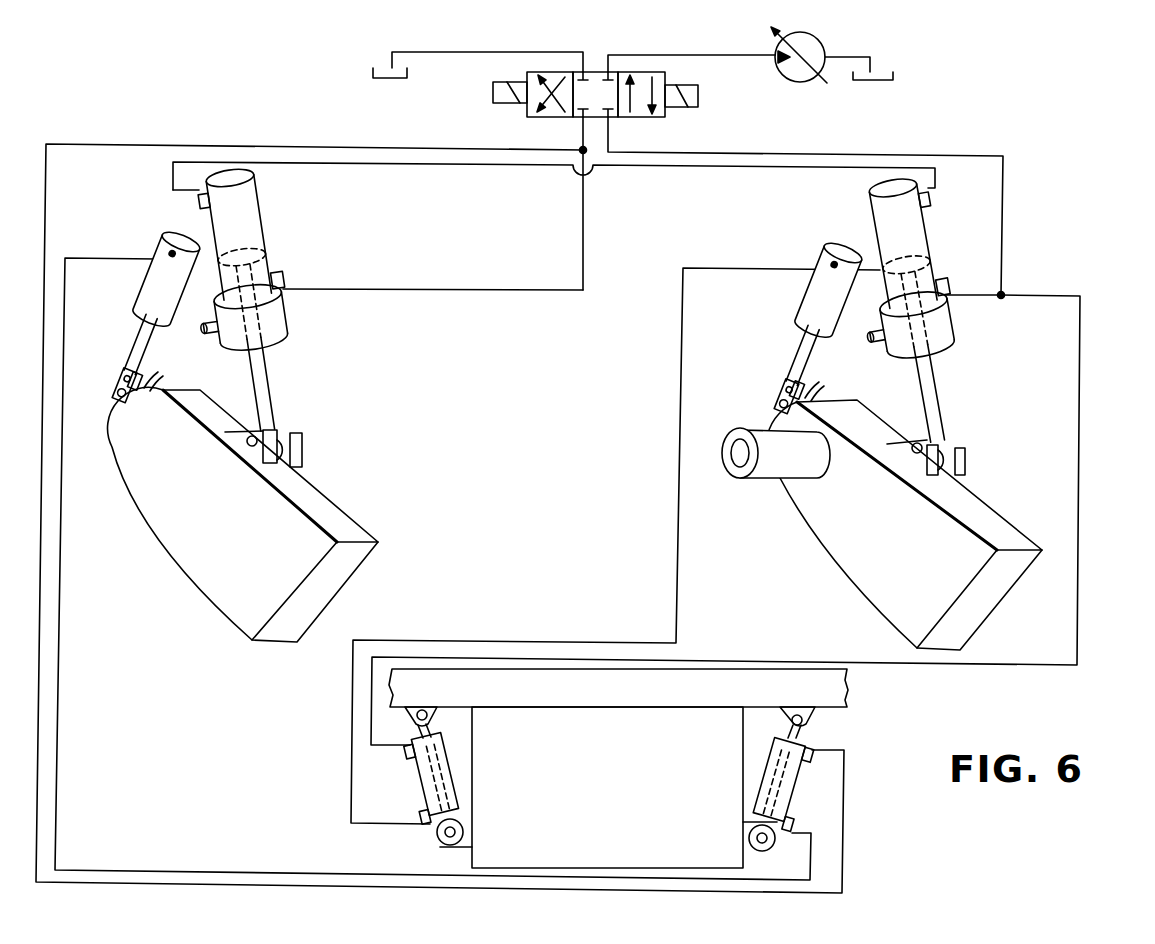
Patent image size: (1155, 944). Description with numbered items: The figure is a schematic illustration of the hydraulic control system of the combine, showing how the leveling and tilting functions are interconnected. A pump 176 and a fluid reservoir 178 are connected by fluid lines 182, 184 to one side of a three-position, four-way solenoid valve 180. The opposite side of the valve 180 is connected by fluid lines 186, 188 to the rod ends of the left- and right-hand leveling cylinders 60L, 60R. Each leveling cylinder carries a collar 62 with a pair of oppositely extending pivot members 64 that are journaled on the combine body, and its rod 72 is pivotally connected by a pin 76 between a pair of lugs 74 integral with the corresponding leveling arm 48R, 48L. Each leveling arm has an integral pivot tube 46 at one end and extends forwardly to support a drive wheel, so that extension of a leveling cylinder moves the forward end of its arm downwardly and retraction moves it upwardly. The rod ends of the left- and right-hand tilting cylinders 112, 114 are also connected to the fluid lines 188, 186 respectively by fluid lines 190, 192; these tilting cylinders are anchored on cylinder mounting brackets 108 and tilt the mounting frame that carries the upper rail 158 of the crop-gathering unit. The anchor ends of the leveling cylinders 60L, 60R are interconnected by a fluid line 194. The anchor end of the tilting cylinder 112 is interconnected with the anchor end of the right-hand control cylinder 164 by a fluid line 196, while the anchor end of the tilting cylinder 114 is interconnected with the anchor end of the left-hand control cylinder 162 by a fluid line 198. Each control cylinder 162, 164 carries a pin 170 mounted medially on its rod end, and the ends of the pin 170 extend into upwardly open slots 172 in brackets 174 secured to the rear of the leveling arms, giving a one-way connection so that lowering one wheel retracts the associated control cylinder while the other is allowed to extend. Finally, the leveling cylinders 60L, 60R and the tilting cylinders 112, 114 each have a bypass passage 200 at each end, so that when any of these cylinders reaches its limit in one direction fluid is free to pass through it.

The pivot tube 46 is at (768, 470).
The right-hand leveling arm 48R is at (329, 498).
The left-hand leveling arm 48L is at (818, 530).
The right-hand leveling cylinder 60R is at (253, 218).
The left-hand leveling cylinder 60L is at (917, 227).
The collar 62 is at (279, 317).
The pivot member 64 is at (217, 334).
The rod 72 is at (266, 378).
The lug 74 is at (276, 428).
The pin 76 is at (250, 445).
The cylinder mounting bracket 108 is at (462, 845).
The left-hand tilting cylinder 112 is at (789, 793).
The right-hand tilting cylinder 114 is at (421, 772).
The upper rail 158 is at (834, 700).
The left-hand control cylinder 162 is at (813, 292).
The right-hand control cylinder 164 is at (152, 283).
The pin 170 is at (114, 394).
The slot 172 is at (111, 374).
The bracket 174 is at (155, 384).
The pump 176 is at (808, 76).
The fluid reservoir 178 is at (372, 72).
The solenoid valve 180 is at (657, 117).
The fluid line 182 is at (718, 54).
The fluid line 184 is at (500, 52).
The fluid line 186 is at (1002, 222).
The fluid line 188 is at (582, 238).
The fluid line 190 is at (46, 198).
The fluid line 192 is at (1079, 444).
The fluid line 194 is at (727, 167).
The fluid line 196 is at (247, 872).
The fluid line 198 is at (679, 606).
The bypass passage 200 is at (196, 196).